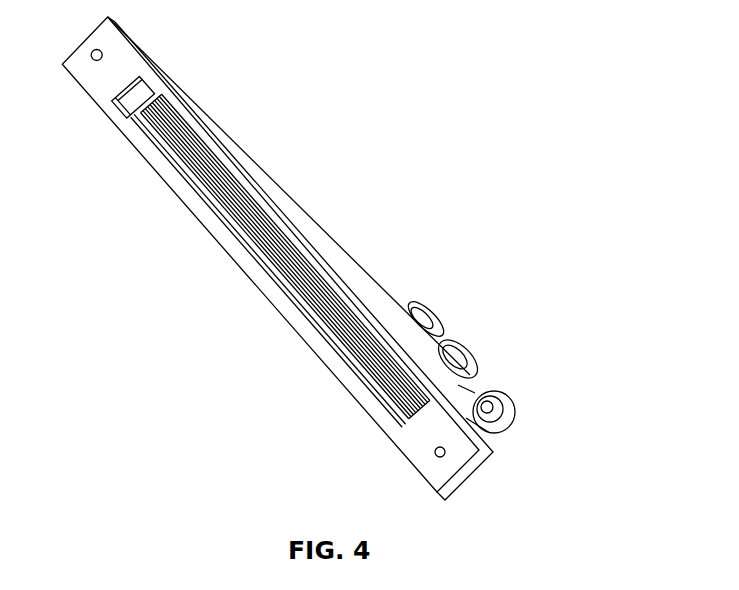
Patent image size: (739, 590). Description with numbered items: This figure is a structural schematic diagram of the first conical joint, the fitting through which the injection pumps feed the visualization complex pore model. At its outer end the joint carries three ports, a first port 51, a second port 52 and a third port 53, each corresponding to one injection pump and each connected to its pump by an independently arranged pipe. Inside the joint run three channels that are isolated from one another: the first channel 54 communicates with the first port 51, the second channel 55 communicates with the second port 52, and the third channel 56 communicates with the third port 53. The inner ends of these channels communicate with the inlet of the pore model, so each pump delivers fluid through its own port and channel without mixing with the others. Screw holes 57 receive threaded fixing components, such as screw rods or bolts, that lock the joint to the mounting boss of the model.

The first port 51 is at (515, 417).
The second port 52 is at (477, 362).
The third port 53 is at (443, 328).
The first channel 54 is at (150, 120).
The second channel 55 is at (200, 154).
The third channel 56 is at (243, 224).
The screw hole 57 is at (445, 452).